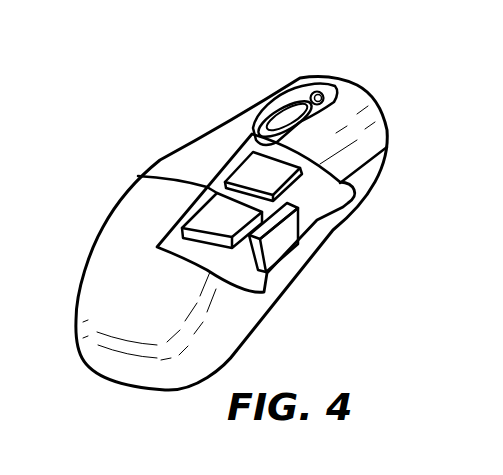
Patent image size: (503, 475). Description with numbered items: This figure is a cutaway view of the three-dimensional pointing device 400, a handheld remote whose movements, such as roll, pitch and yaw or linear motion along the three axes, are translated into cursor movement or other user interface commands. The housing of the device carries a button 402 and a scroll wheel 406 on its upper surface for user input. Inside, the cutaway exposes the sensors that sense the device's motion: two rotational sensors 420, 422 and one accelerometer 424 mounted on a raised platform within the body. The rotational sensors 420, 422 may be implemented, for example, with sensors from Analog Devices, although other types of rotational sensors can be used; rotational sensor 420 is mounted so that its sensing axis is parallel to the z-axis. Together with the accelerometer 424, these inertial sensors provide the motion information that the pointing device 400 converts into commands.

The 3D pointing device 400 is at (176, 100).
The button 402 is at (198, 146).
The scroll wheel 406 is at (290, 117).
The rotational sensor 420 is at (272, 173).
The rotational sensor 422 is at (273, 242).
The accelerometer 424 is at (213, 217).